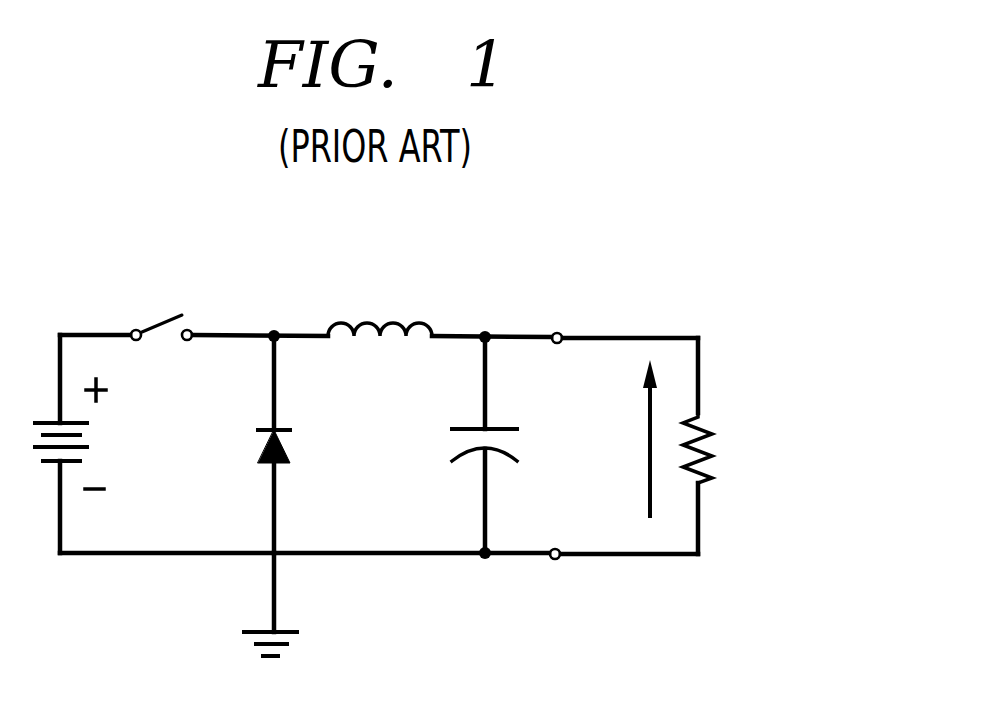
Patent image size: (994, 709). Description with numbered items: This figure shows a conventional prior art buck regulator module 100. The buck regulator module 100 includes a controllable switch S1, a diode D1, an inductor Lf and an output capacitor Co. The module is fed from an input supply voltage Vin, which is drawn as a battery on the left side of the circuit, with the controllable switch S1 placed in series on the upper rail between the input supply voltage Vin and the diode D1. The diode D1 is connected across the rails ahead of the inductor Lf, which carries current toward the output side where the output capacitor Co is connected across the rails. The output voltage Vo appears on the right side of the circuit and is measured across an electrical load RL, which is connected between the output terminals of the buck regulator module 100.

The buck regulator module 100 is at (762, 278).
The input supply voltage Vin is at (96, 434).
The controllable switch S1 is at (161, 359).
The diode D1 is at (254, 444).
The inductor Lf is at (380, 300).
The output capacitor Co is at (463, 445).
The output voltage Vo is at (629, 439).
The electrical load RL is at (727, 448).